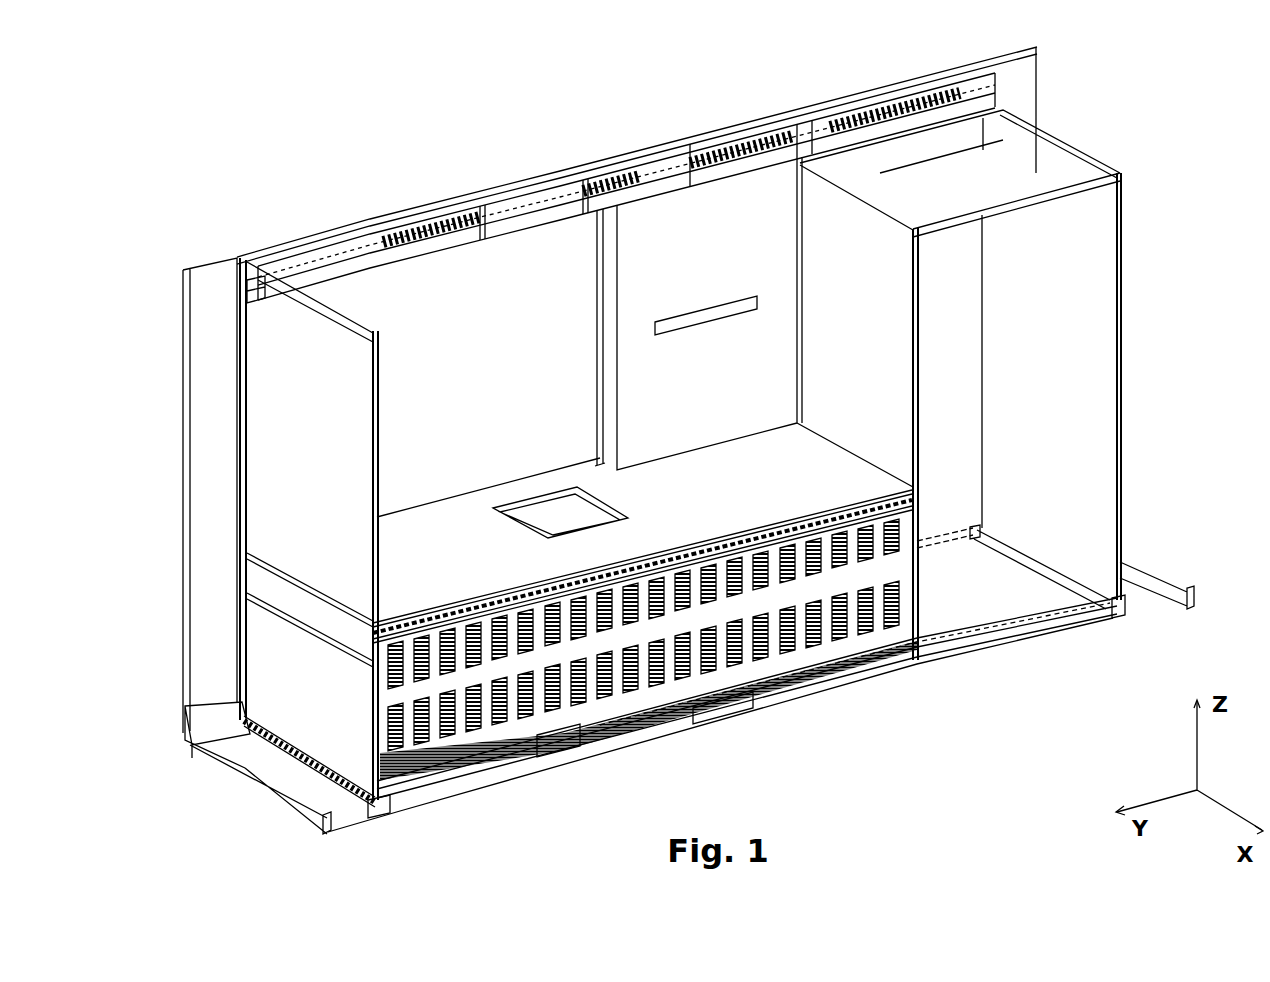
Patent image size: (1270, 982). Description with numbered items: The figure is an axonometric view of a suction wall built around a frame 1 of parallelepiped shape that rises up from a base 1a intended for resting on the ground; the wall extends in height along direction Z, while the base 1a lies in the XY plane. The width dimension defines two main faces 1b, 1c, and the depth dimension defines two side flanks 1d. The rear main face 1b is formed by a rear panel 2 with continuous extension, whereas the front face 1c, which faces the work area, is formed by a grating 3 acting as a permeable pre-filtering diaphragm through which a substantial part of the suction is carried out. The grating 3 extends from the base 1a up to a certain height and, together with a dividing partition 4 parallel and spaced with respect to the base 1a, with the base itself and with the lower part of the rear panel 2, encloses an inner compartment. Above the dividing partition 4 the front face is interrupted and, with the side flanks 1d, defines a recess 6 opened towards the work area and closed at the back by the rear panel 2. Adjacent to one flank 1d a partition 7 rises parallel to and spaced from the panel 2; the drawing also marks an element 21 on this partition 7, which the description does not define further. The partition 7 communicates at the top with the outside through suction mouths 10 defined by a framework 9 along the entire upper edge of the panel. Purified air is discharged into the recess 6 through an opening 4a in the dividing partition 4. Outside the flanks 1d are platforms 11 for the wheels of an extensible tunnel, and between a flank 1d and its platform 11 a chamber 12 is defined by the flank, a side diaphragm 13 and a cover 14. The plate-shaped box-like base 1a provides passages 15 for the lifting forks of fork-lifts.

The frame 1 is at (437, 198).
The base 1a is at (810, 688).
The main face 1b is at (232, 258).
The front face 1c is at (920, 430).
The side flank 1d is at (292, 325).
The rear panel 2 is at (492, 345).
The grating 3 is at (850, 598).
The dividing partition 4 is at (465, 572).
The opening 4a is at (594, 514).
The recess 6 is at (578, 325).
The partition 7 is at (708, 250).
The framework 9 is at (822, 104).
The suction mouth 10 is at (880, 115).
The platform 11 is at (275, 770).
The chamber 12 is at (1085, 325).
The side diaphragm 13 is at (1120, 380).
The cover 14 is at (1030, 160).
The passage 15 is at (557, 755).
The slot 21 is at (728, 305).